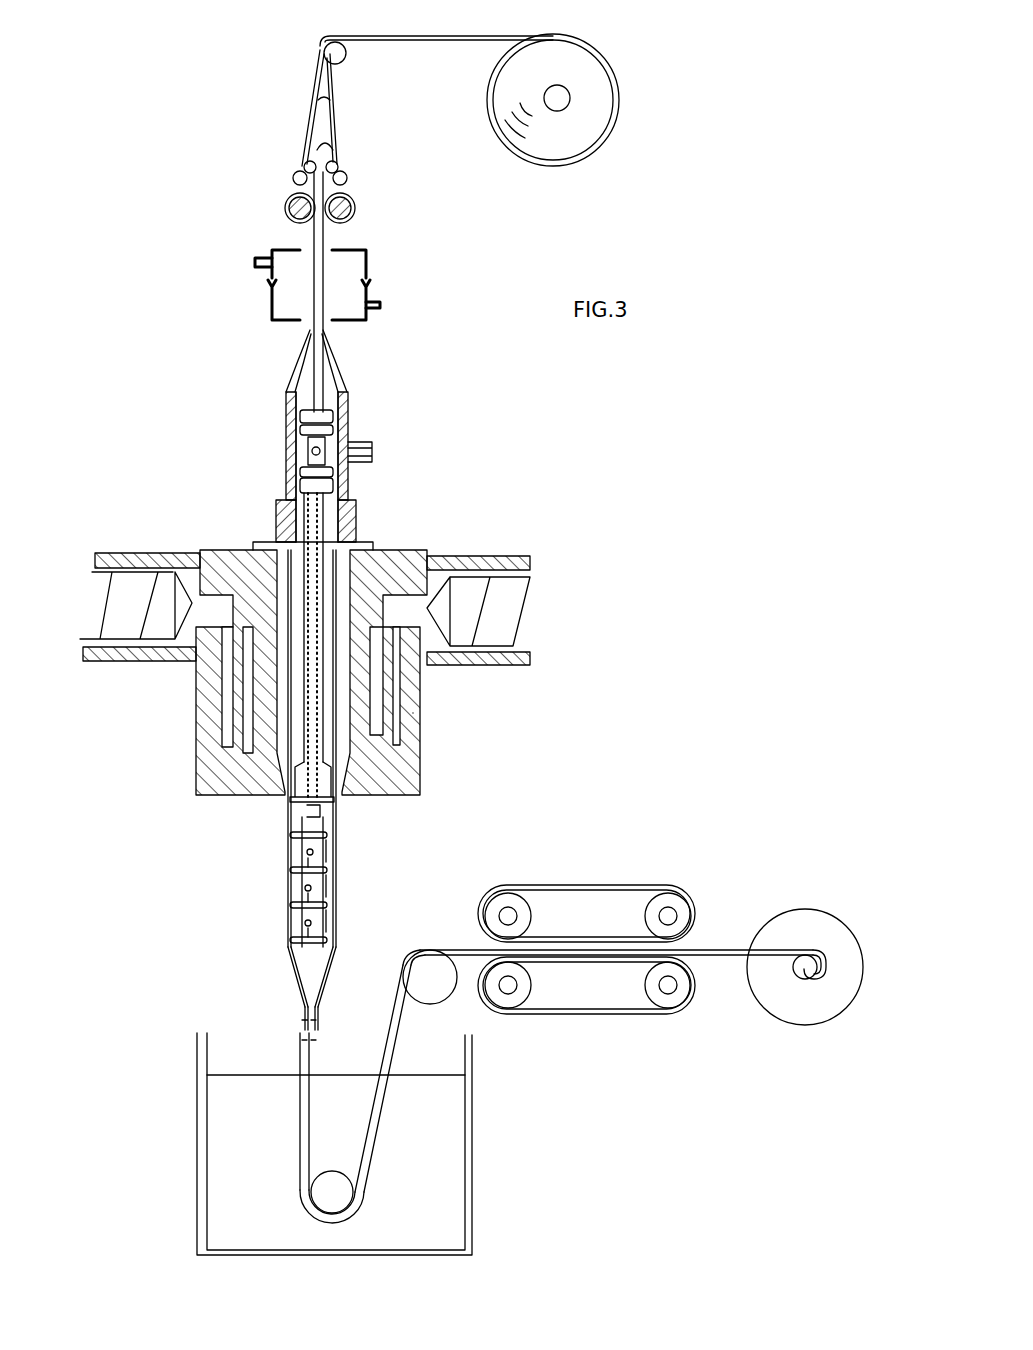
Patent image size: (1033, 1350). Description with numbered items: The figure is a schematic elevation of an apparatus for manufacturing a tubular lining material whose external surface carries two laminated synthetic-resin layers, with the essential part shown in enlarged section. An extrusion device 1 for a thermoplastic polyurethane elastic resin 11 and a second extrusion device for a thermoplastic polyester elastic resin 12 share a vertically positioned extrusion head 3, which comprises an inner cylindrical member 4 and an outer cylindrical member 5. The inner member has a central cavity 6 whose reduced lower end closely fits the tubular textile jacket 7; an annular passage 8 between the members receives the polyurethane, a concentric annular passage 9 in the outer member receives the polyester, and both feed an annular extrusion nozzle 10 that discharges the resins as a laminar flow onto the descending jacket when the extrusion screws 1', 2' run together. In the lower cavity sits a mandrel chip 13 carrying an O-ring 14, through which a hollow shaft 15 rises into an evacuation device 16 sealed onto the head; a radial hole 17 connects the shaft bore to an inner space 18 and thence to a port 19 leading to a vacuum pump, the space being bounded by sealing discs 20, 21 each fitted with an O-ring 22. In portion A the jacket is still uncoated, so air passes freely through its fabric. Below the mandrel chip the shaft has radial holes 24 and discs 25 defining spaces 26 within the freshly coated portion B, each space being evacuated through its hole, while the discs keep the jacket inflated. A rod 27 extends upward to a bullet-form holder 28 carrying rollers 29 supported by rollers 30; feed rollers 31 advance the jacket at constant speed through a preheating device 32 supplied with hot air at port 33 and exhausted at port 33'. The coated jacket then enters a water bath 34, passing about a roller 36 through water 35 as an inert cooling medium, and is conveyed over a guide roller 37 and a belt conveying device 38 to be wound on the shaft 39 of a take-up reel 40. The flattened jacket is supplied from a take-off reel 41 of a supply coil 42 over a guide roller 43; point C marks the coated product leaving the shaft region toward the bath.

The extrusion device 1 is at (504, 584).
The extrusion screw 1' is at (499, 611).
The extrusion screw 2' is at (124, 605).
The extrusion head 3 is at (402, 546).
The inner cylindrical member 4 is at (423, 558).
The outer cylindrical member 5 is at (413, 713).
The cavity 6 is at (340, 667).
The tubular textile jacket 7 is at (454, 35).
The annular passage 8 is at (252, 672).
The annular passage 9 is at (227, 692).
The annular extrusion nozzle 10 is at (207, 795).
The thermoplastic polyurethane elastic resin 11 is at (375, 725).
The thermoplastic polyester elastic resin 12 is at (397, 743).
The mandrel chip 13 is at (308, 787).
The O-ring 14 is at (293, 817).
The hollow shaft 15 is at (305, 517).
The evacuation device 16 is at (352, 435).
The radial hole 17 is at (312, 451).
The inner space 18 is at (297, 443).
The port 19 is at (374, 455).
The sealing disc 20 is at (325, 417).
The sealing disc 21 is at (302, 472).
The O-ring 22 is at (347, 420).
The radial holes 24 is at (300, 835).
The discs 25 is at (303, 852).
The spaces 26 is at (323, 850).
The rod 27 is at (318, 360).
The holder 28 is at (330, 142).
The rollers 29 is at (339, 166).
The rollers 30 is at (347, 178).
The feed rollers 31 is at (355, 206).
The preheating device 32 is at (370, 264).
The port 33 is at (400, 300).
The port 33' is at (251, 279).
The water bath 34 is at (470, 1122).
The water 35 is at (433, 1188).
The roller 36 is at (347, 1200).
The guide roller 37 is at (430, 990).
The belt conveying device 38 is at (593, 880).
The shaft 39 is at (805, 979).
The take-up reel 40 is at (810, 905).
The take-off reel 41 is at (560, 108).
The supply coil 42 is at (595, 77).
The guide roller 43 is at (347, 59).
The portion of the textile jacket A is at (323, 507).
The portion of the tubular textile jacket B is at (344, 801).
The point C is at (296, 1033).